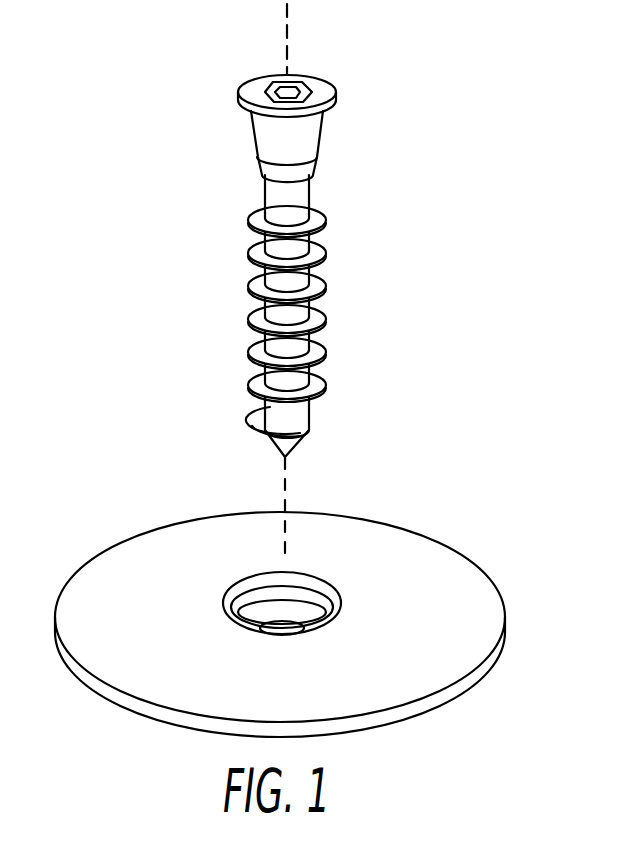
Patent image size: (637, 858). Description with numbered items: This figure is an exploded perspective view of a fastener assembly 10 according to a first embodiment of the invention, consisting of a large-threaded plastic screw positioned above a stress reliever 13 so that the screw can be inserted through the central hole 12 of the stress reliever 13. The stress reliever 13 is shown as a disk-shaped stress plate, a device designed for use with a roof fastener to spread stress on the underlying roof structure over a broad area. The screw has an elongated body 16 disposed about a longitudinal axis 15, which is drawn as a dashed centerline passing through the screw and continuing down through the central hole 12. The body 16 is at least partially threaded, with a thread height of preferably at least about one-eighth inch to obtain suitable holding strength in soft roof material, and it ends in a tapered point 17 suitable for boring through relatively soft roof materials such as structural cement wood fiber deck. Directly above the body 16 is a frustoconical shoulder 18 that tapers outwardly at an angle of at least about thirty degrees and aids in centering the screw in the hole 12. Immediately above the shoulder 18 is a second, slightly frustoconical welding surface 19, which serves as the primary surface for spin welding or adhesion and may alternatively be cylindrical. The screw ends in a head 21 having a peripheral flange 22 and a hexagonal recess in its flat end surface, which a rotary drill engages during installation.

The fastener assembly 10 is at (162, 366).
The central hole 12 is at (340, 571).
The stress reliever 13 is at (140, 545).
The longitudinal axis 15 is at (290, 485).
The elongated body 16 is at (300, 317).
The tapered point 17 is at (300, 432).
The frustoconical shoulder 18 is at (307, 165).
The welding surface 19 is at (307, 137).
The head 21 is at (248, 97).
The peripheral flange 22 is at (301, 88).